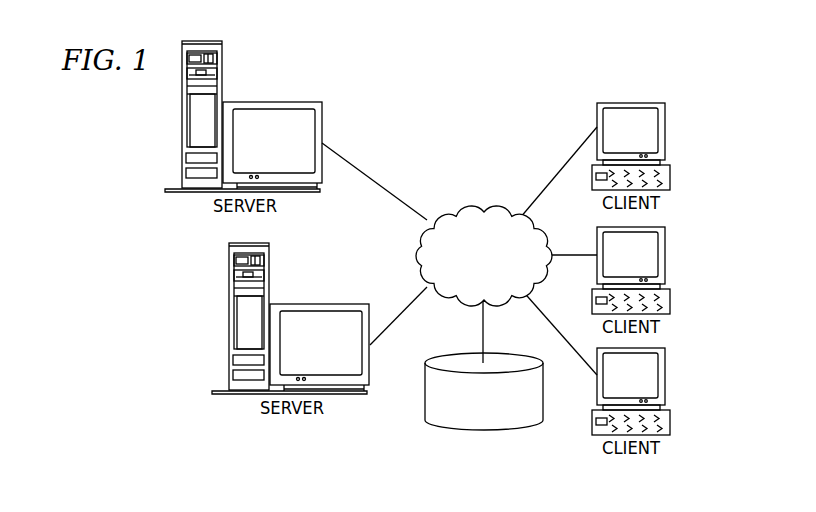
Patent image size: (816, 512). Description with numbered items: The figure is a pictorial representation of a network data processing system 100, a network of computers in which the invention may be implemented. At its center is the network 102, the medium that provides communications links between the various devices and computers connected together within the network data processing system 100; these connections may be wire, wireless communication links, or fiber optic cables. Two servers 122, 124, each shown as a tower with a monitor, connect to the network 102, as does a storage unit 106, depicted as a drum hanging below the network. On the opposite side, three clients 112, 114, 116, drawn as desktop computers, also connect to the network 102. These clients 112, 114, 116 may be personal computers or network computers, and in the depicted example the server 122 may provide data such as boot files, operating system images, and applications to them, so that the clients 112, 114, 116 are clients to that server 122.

The network data processing system 100 is at (531, 100).
The network 102 is at (457, 212).
The storage unit 106 is at (500, 431).
The client 112 is at (665, 132).
The client 114 is at (665, 256).
The client 116 is at (665, 377).
The server 122 is at (182, 118).
The server 124 is at (229, 318).